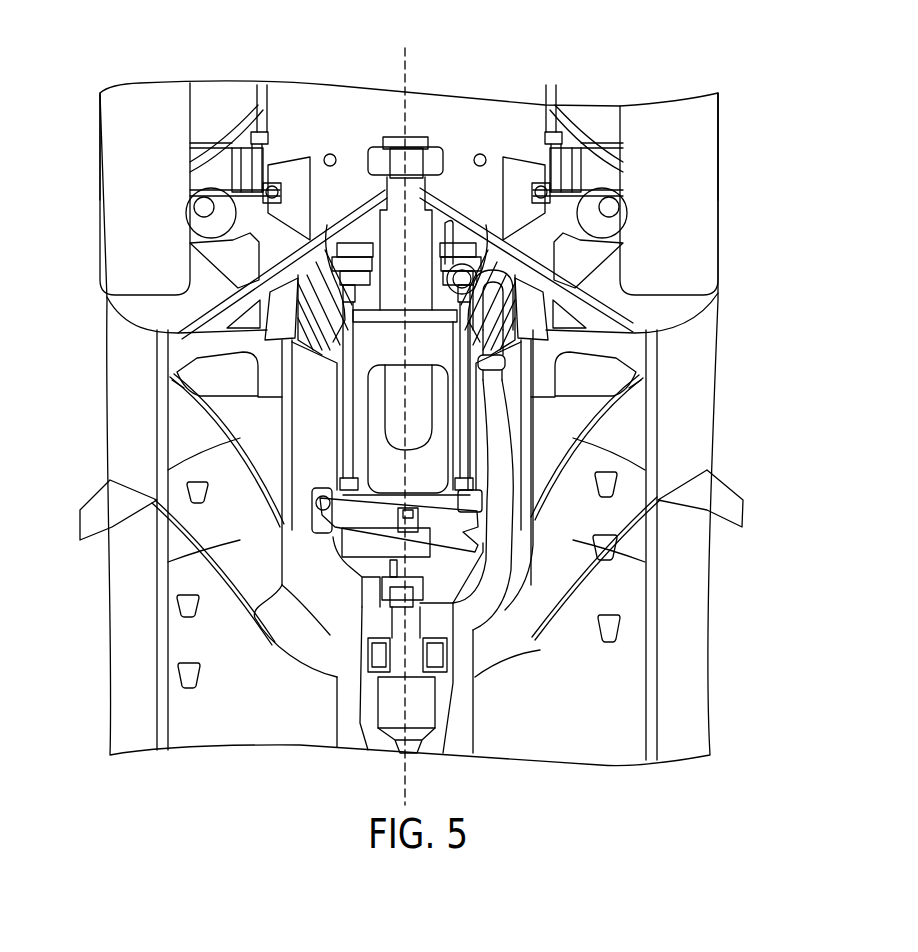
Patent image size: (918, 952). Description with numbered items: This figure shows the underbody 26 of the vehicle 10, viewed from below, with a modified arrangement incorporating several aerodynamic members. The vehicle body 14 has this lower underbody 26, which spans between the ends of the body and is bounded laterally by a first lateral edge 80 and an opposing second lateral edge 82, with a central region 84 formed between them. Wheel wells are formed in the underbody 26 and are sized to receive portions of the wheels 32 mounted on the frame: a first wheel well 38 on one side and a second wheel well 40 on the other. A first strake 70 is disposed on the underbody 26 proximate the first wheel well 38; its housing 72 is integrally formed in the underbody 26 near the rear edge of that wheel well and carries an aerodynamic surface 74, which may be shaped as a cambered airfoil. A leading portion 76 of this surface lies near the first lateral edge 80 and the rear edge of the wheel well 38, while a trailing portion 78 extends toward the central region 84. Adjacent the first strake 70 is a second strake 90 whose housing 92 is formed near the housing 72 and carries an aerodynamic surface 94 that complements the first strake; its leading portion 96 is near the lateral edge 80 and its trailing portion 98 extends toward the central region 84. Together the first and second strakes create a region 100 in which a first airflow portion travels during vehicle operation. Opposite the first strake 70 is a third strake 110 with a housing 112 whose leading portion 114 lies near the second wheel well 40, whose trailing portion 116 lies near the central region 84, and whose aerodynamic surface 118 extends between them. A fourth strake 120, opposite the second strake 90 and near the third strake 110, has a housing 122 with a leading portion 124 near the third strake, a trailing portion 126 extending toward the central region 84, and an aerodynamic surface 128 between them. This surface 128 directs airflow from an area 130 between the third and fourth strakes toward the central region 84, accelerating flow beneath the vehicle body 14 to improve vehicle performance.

The vehicle 10 is at (690, 60).
The vehicle body 14 is at (260, 66).
The underbody 26 is at (368, 102).
The wheels 32 is at (110, 237).
The wheel well 38 is at (712, 297).
The wheel well 40 is at (105, 300).
The first strake 70 is at (625, 415).
The housing 72 is at (582, 447).
The aerodynamic surface 74 is at (598, 423).
The leading portion 76 is at (633, 383).
The trailing portion 78 is at (543, 515).
The first lateral edge 80 is at (718, 122).
The second lateral edge 82 is at (100, 118).
The central region 84 is at (412, 70).
The second strake 90 is at (548, 614).
The housing 92 is at (593, 587).
The aerodynamic surface 94 is at (610, 558).
The leading portion 96 is at (630, 533).
The trailing portion 98 is at (540, 650).
The region 100 is at (578, 562).
The third strake 110 is at (190, 410).
The housing 112 is at (230, 443).
The leading portion 114 is at (180, 382).
The trailing portion 116 is at (270, 508).
The aerodynamic surface 118 is at (217, 427).
The fourth strake 120 is at (182, 559).
The housing 122 is at (205, 578).
The leading portion 124 is at (177, 530).
The trailing portion 126 is at (268, 642).
The aerodynamic surface 128 is at (281, 588).
The area 130 is at (262, 563).